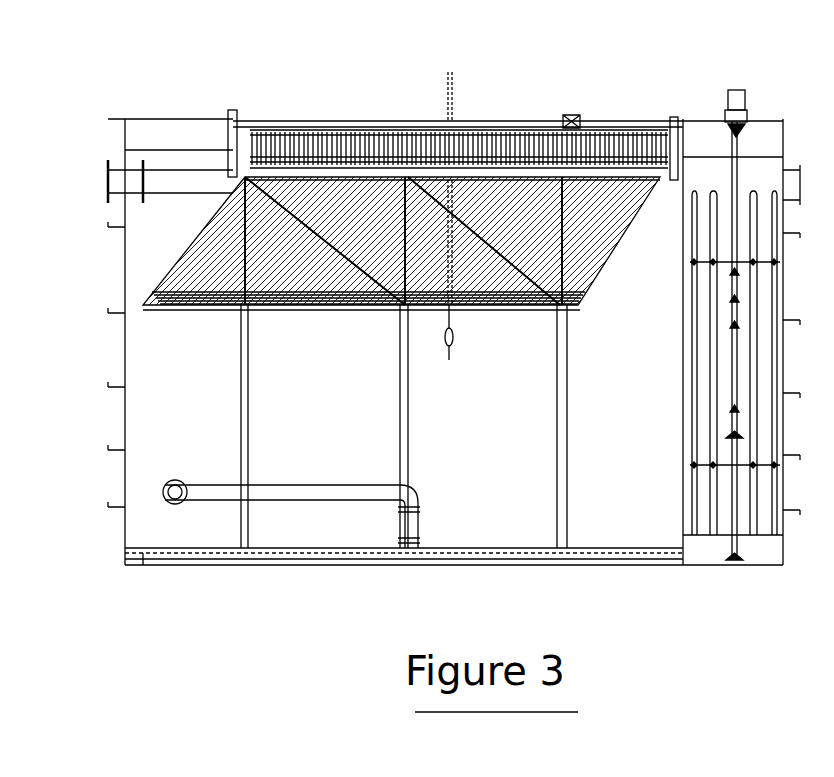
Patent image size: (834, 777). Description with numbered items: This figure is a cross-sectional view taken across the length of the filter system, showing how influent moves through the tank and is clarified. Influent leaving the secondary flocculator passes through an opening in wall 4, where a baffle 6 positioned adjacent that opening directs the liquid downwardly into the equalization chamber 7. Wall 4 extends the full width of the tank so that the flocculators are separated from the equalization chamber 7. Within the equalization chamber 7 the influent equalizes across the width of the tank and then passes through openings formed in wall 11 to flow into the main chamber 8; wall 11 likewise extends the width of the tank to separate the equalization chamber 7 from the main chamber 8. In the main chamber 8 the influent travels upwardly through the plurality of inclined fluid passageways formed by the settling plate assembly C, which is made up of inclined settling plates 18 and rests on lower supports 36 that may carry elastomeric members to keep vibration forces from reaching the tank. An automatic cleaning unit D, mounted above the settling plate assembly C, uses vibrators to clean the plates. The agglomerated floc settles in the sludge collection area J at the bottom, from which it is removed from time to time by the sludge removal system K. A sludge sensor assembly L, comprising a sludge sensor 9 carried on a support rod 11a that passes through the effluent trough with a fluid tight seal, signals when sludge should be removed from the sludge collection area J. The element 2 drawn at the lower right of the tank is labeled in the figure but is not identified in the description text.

The agitator rod 2 is at (767, 556).
The wall 4 is at (683, 334).
The baffle 6 is at (683, 193).
The equalization chamber 7 is at (645, 440).
The main chamber 8 is at (497, 430).
The sludge sensor 9 is at (445, 351).
The wall 11 is at (572, 510).
The support rod 11a is at (490, 313).
The inclined settling plate 18 is at (333, 310).
The lower supports 36 is at (250, 442).
The settling plate assembly C is at (152, 263).
The automatic cleaning unit D is at (586, 93).
The sludge collection area J is at (487, 525).
The sludge removal system K is at (361, 460).
The sludge sensor assembly L is at (477, 66).